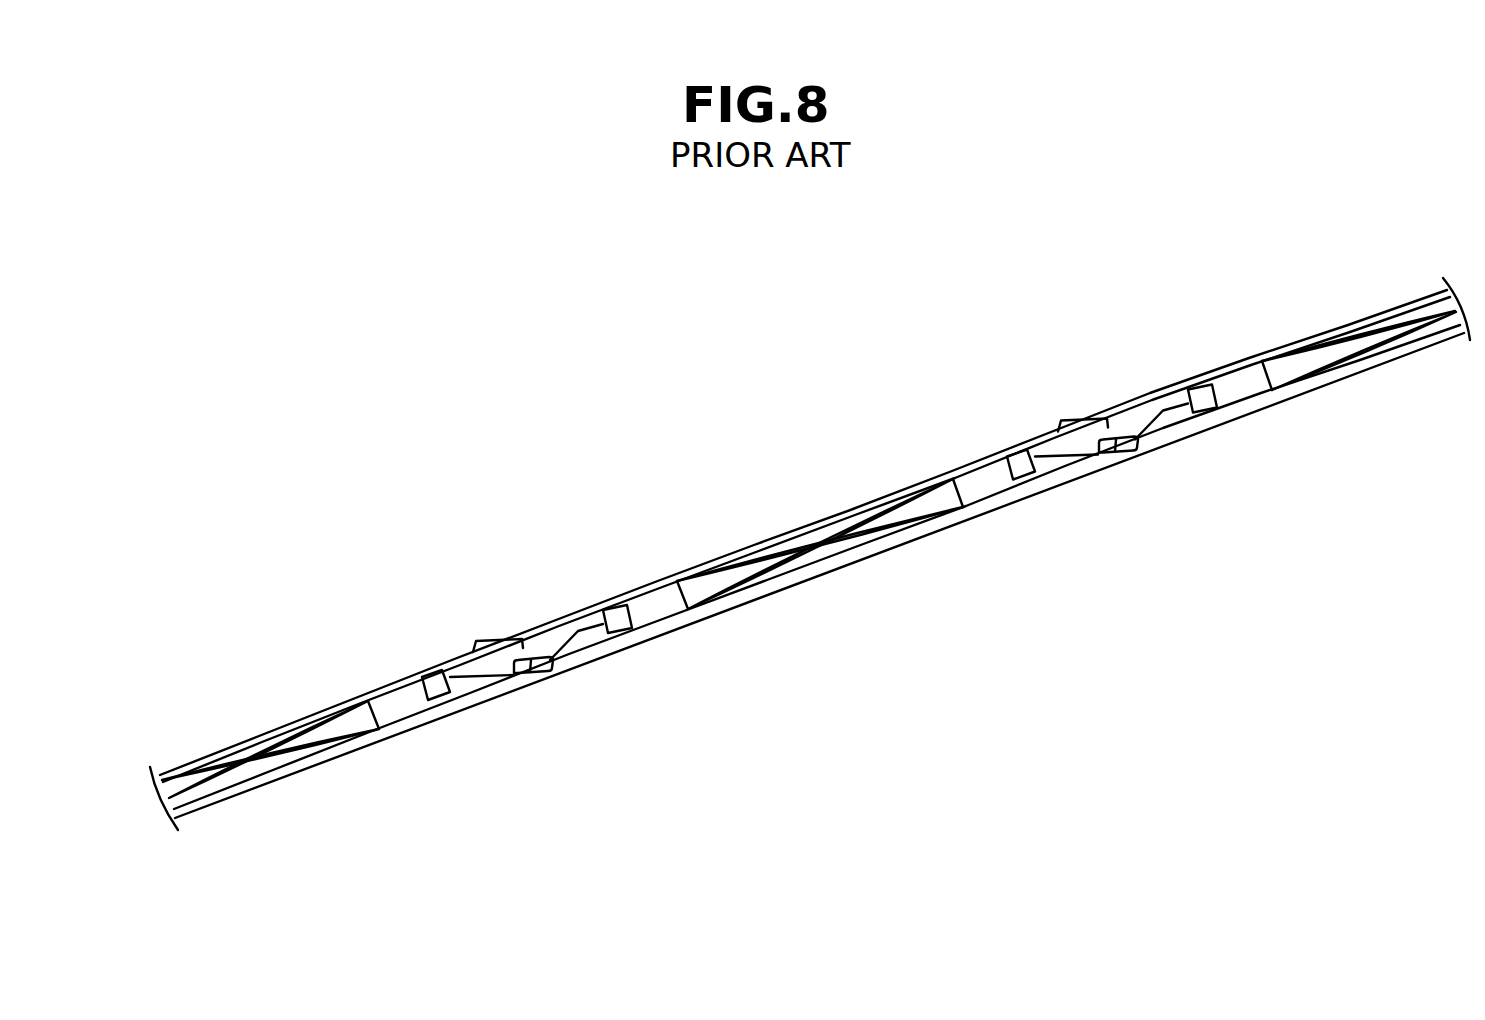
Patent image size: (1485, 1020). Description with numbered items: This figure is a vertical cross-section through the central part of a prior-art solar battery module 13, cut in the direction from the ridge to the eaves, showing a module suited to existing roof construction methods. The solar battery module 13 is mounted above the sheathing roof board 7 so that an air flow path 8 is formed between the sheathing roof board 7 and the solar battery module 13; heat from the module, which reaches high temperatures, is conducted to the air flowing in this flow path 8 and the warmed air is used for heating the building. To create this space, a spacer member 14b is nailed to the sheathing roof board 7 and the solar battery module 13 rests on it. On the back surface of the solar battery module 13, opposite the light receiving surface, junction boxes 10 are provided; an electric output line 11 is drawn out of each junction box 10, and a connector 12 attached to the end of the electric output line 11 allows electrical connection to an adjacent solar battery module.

The solar battery module 13 is at (810, 554).
The air flow path 8 is at (1253, 388).
The sheathing roof board 7 is at (1243, 412).
The spacer member 14b is at (934, 513).
The junction box 10 is at (620, 620).
The electric output line 11 is at (588, 632).
The connector 12 is at (540, 668).